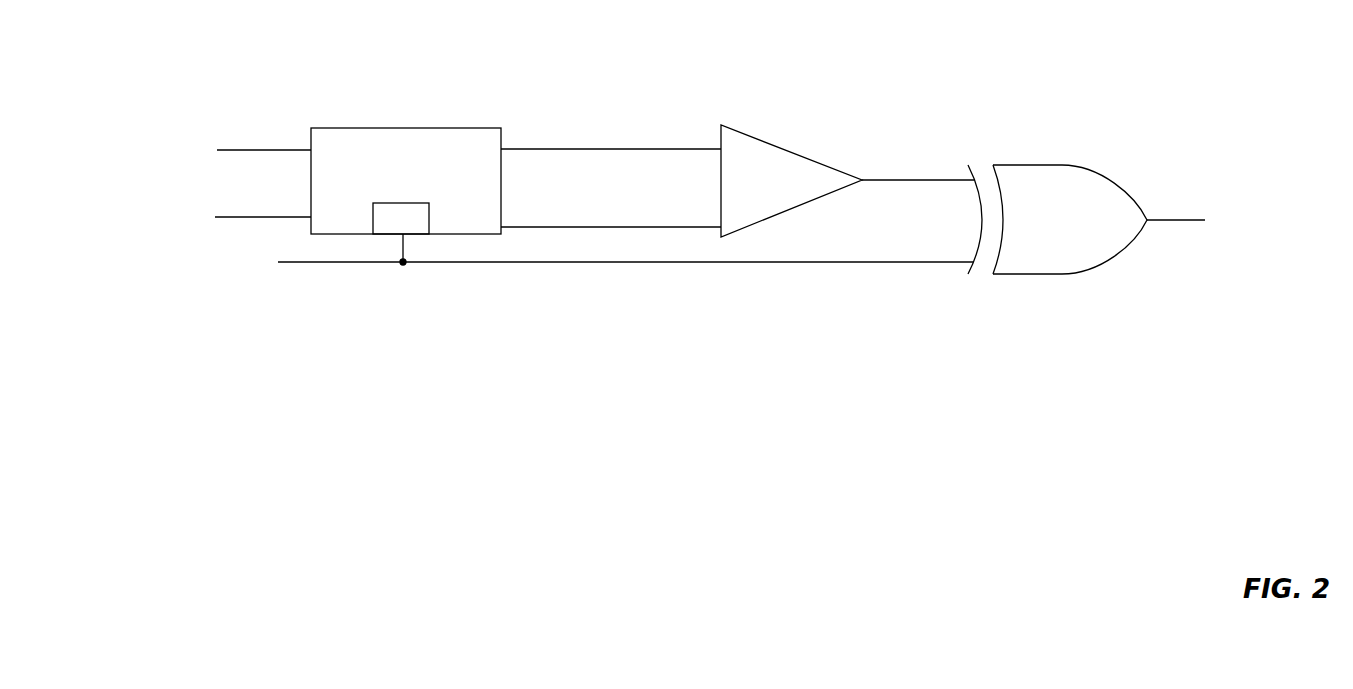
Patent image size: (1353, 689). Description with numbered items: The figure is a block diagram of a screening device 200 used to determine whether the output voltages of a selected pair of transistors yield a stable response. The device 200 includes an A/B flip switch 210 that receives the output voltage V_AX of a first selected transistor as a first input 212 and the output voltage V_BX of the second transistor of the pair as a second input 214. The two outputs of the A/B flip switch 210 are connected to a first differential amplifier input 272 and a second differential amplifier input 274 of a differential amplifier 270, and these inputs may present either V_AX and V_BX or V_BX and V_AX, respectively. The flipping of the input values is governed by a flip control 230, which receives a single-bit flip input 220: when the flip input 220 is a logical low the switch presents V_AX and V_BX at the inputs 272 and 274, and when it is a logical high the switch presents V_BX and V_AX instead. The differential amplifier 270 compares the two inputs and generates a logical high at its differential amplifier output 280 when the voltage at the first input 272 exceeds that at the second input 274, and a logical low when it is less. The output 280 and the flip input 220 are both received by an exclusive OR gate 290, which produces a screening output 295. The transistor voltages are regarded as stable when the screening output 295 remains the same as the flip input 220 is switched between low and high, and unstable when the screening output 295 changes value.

The screening device 200 is at (708, 176).
The A/B flip switch 210 is at (438, 128).
The first input 212 is at (282, 150).
The second input 214 is at (288, 216).
The flip input 220 is at (213, 270).
The flip control 230 is at (373, 213).
The differential amplifier 270 is at (782, 150).
The first differential amplifier input 272 is at (673, 149).
The second differential amplifier input 274 is at (673, 227).
The differential amplifier output 280 is at (890, 180).
The exclusive OR (XOR) gate 290 is at (1107, 177).
The screening output 295 is at (1250, 195).